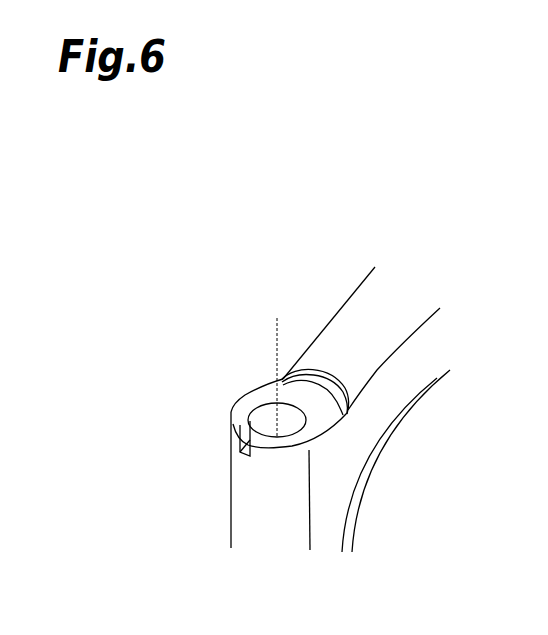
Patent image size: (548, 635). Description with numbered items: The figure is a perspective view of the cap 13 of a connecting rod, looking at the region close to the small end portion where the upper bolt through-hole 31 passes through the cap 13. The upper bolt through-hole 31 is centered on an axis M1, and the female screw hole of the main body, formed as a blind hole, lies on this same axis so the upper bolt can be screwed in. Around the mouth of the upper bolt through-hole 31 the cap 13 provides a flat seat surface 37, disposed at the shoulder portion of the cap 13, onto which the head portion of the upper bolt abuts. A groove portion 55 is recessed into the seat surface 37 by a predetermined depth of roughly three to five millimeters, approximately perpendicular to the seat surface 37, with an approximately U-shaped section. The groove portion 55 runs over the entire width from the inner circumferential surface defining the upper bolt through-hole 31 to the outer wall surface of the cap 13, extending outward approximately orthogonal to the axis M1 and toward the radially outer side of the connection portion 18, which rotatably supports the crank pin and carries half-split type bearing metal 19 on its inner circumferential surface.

The cap 13 is at (274, 275).
The axis of the upper bolt through-hole M1 is at (277, 341).
The upper bolt through-hole 31 is at (265, 406).
The groove portion 55 is at (240, 440).
The seat surface 37 is at (320, 412).
The connection portion 18 is at (417, 397).
The bearing metal 19 is at (403, 425).